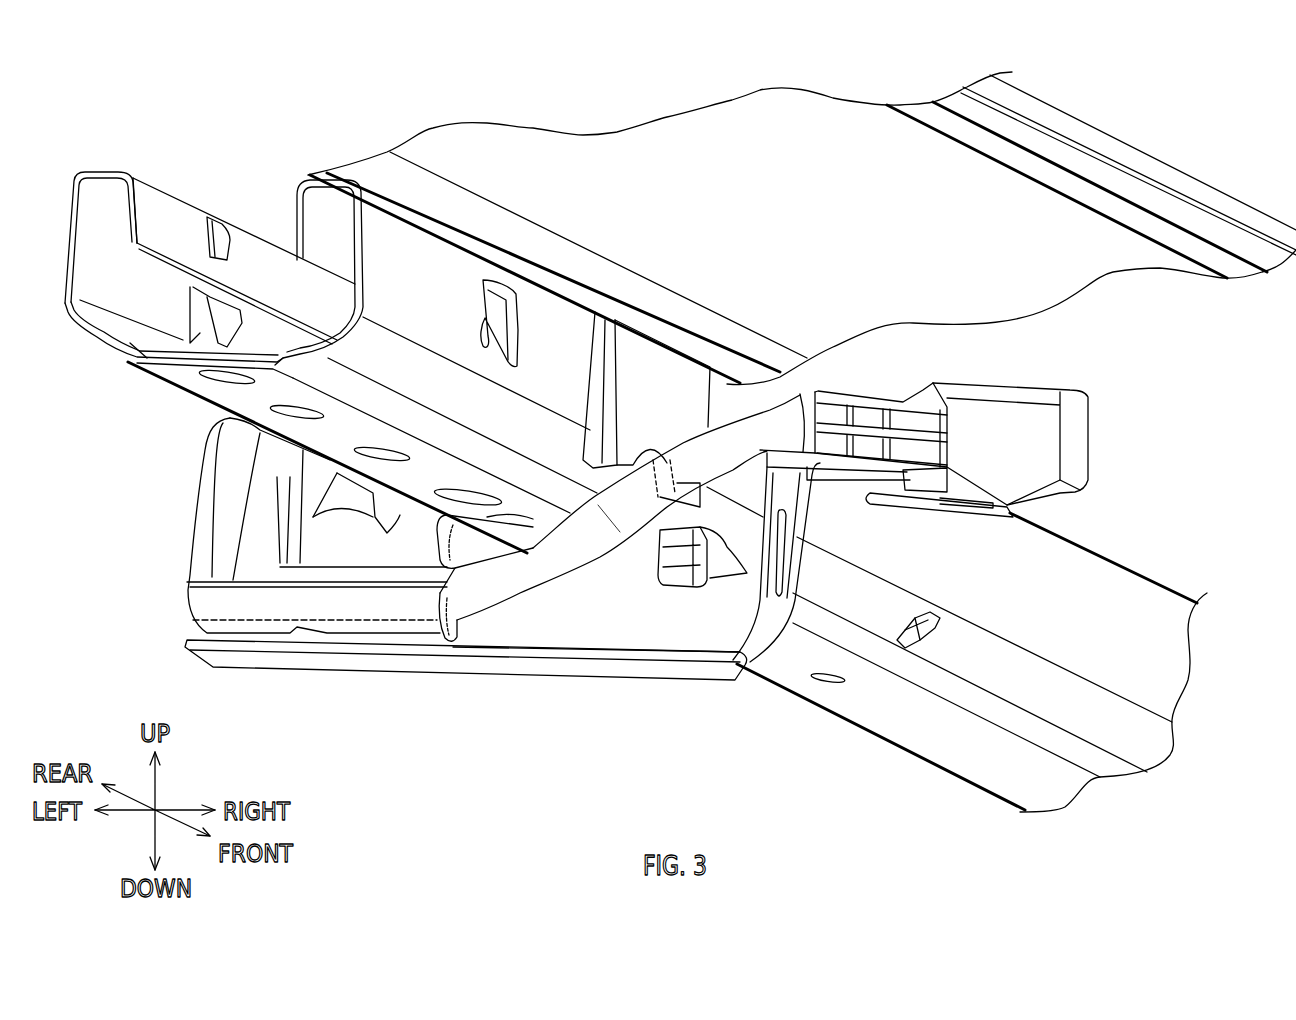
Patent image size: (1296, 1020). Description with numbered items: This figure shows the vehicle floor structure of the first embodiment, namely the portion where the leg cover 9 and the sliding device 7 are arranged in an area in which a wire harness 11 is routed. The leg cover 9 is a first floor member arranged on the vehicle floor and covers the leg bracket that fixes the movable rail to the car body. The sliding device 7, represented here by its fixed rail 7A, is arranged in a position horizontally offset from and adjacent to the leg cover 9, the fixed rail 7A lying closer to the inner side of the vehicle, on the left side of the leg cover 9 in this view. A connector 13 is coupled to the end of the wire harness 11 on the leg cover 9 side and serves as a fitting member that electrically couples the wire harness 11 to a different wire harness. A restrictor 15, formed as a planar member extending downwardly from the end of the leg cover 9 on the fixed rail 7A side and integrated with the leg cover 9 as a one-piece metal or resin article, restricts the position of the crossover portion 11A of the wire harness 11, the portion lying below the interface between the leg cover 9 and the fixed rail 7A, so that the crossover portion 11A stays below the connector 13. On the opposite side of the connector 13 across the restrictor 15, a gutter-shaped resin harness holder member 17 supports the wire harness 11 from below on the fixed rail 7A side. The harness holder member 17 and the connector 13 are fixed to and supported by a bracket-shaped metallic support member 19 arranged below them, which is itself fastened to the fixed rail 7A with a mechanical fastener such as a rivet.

The sliding device 7 is at (97, 155).
The fixed rail 7A is at (167, 197).
The leg cover 9 is at (598, 127).
The wire harness 11 is at (593, 567).
The crossover portion 11A is at (613, 527).
The connector 13 is at (1092, 453).
The restrictor 15 is at (595, 431).
The harness holder member 17 is at (263, 603).
The support member 19 is at (427, 675).